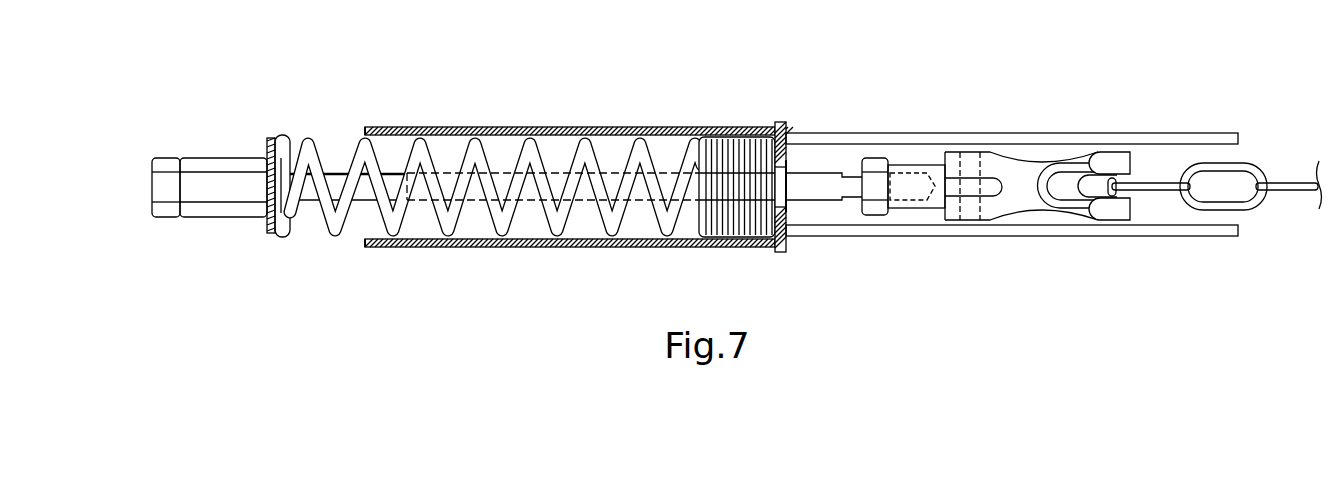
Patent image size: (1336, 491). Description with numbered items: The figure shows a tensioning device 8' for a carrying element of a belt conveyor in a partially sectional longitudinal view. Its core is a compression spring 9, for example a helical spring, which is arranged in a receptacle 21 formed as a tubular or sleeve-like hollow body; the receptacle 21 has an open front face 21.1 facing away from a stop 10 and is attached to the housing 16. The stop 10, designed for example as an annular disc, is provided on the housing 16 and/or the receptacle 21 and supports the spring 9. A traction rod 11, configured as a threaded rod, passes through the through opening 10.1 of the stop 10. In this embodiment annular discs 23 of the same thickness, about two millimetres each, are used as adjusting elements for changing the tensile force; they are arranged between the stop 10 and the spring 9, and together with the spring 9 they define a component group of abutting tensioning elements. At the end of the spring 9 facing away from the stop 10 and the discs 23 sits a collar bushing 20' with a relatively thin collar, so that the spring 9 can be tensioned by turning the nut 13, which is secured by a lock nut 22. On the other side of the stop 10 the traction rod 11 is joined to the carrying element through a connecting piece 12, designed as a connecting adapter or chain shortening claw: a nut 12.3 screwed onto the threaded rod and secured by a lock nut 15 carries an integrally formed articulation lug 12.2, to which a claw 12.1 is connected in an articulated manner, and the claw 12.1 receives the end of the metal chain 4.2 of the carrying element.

The tensioning device 8' is at (601, 43).
The lock nut 22 is at (165, 163).
The nut 13 is at (212, 163).
The collar bushing 20' is at (262, 150).
The spring 9 is at (476, 143).
The traction rod 11 is at (826, 192).
The annular discs 23 is at (742, 128).
The receptacle 21 is at (533, 247).
The open front face 21.1 is at (363, 246).
The stop 10 is at (780, 122).
The through opening 10.1 is at (788, 167).
The housing 16 is at (1200, 140).
The lock nut 15 is at (875, 212).
The nut 12.3 is at (915, 167).
The connecting piece 12 is at (1027, 172).
The articulation lug 12.2 is at (985, 188).
The claw 12.1 is at (1111, 214).
The metal chain 4.2 is at (1258, 172).